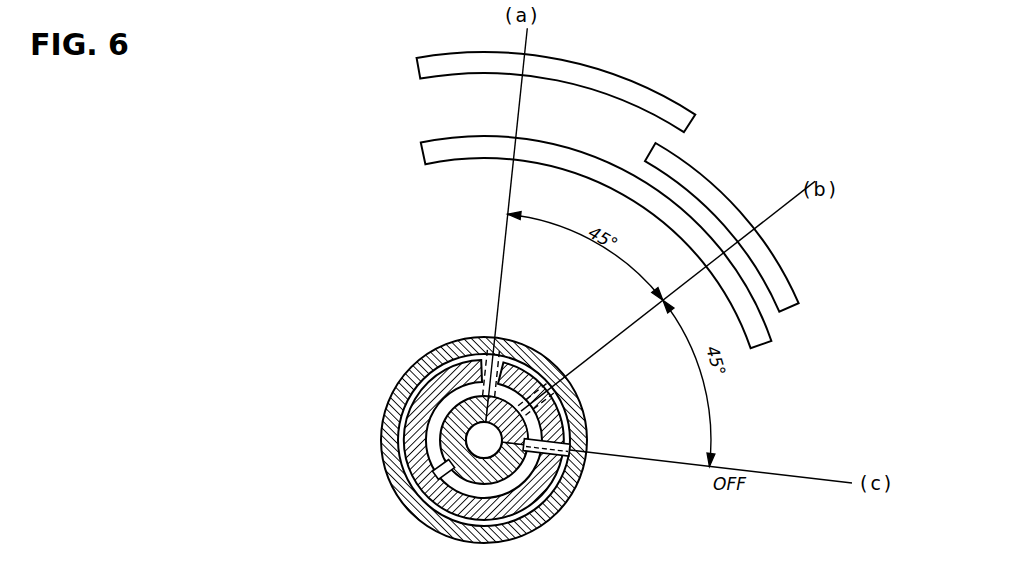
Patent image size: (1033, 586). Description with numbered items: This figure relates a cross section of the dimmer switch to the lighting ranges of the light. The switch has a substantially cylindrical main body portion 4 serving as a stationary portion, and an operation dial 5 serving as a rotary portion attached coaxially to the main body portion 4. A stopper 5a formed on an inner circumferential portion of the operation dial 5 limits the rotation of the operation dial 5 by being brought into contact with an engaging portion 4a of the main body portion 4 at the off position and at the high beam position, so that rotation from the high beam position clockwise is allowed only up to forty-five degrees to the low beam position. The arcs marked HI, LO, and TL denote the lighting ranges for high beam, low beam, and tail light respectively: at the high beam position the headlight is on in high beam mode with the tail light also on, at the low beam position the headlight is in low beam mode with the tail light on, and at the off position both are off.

The main body portion 4 is at (381, 465).
The engaging portion 4a is at (474, 352).
The operation dial 5 is at (396, 384).
The stopper 5a is at (560, 447).
The high beam lighting range HI is at (655, 98).
The low beam lighting range LO is at (789, 300).
The tail light lighting range TL is at (758, 347).